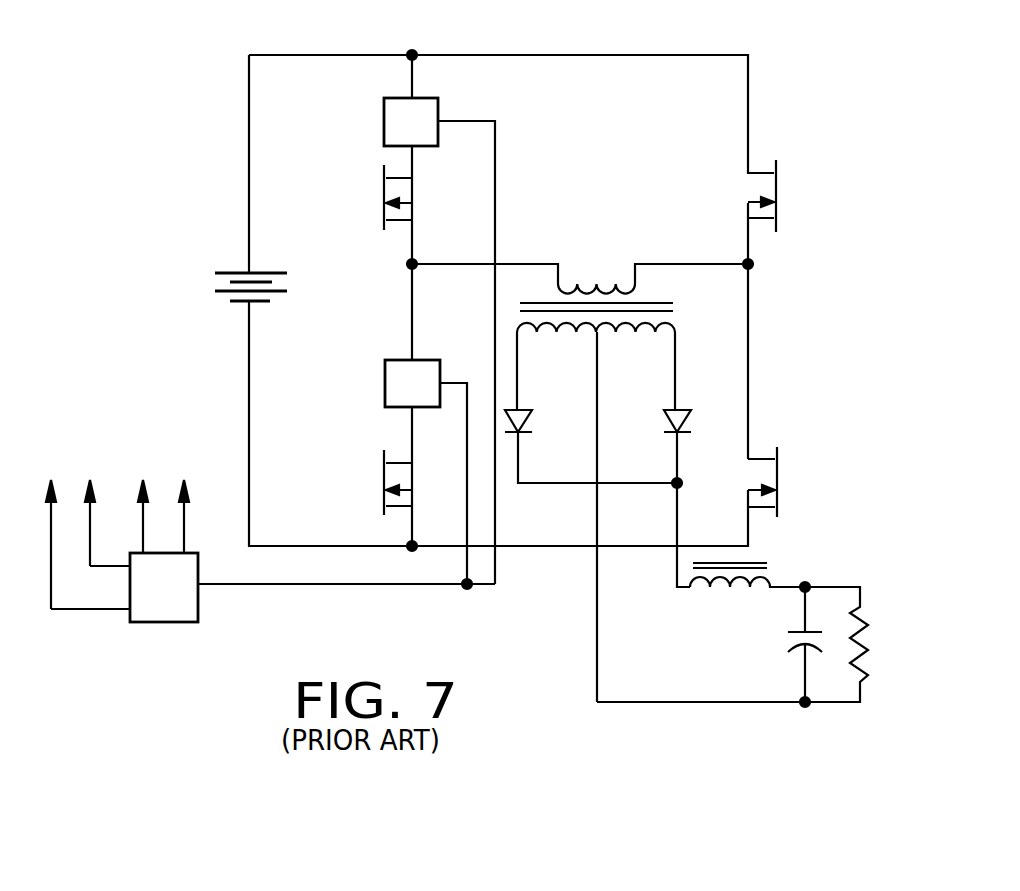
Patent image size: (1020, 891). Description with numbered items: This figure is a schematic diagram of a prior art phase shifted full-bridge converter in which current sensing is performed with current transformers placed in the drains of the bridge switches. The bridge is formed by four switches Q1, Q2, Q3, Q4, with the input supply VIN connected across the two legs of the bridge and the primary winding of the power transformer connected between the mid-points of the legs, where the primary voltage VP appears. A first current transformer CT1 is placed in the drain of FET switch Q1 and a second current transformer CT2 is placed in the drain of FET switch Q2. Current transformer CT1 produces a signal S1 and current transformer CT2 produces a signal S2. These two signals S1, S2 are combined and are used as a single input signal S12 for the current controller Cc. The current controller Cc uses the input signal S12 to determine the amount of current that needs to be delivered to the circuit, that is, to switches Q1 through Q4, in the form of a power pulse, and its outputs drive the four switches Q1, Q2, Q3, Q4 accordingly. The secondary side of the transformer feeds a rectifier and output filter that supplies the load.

The FET switch Q1 is at (50, 523).
The FET switch Q2 is at (72, 472).
The switch Q3 is at (142, 523).
The switch Q4 is at (172, 472).
The current transformer CT1 is at (423, 98).
The current transformer CT2 is at (400, 360).
The signal S1 is at (496, 188).
The signal S2 is at (467, 505).
The input signal S12 is at (368, 588).
The current controller Cc is at (170, 622).
The input voltage source VIN is at (237, 270).
The primary winding voltage VP is at (580, 466).